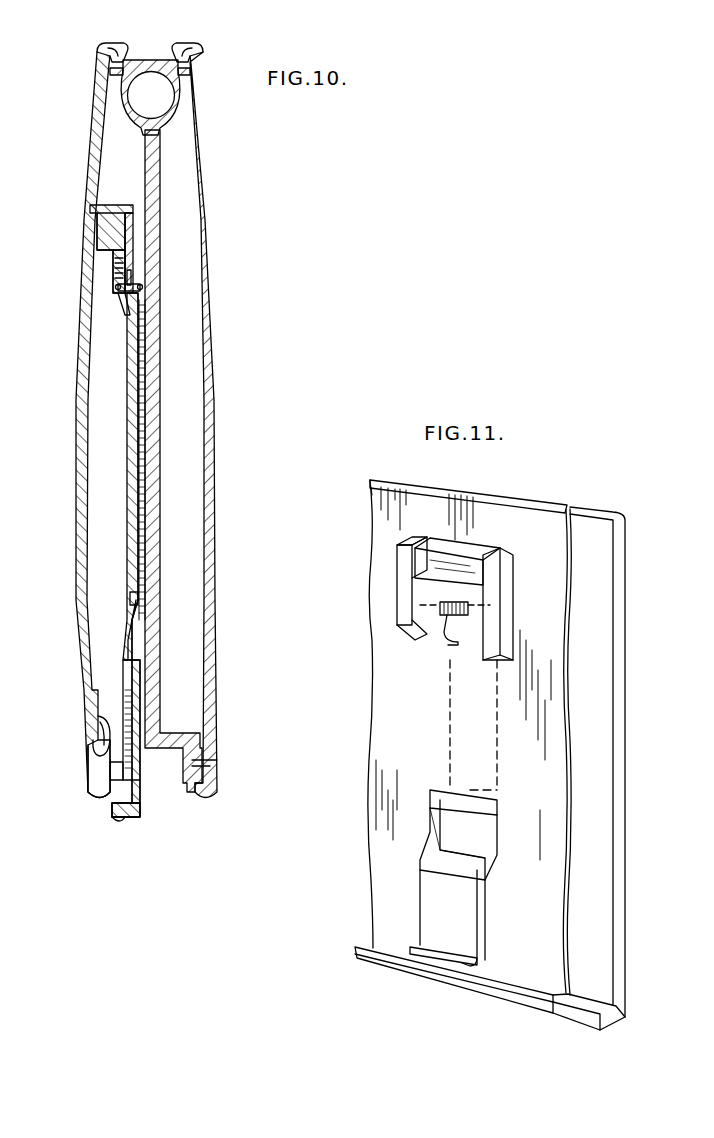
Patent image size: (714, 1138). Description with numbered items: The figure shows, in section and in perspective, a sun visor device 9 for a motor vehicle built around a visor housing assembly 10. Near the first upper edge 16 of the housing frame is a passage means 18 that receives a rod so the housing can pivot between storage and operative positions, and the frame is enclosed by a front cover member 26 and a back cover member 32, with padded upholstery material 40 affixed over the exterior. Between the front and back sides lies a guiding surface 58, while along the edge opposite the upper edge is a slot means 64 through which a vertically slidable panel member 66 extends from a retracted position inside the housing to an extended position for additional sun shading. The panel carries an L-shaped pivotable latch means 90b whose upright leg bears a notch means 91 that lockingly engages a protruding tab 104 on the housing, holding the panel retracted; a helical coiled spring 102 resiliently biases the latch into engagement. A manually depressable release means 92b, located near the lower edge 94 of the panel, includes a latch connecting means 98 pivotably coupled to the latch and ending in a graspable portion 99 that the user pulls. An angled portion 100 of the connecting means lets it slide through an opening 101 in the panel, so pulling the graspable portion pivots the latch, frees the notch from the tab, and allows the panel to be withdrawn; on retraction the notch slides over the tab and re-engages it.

In FIG. 10, the sun visor device 9 is at (238, 148).
In FIG. 10, the visor housing assembly 10 is at (92, 80).
In FIG. 10, the first upper edge 16 is at (168, 57).
In FIG. 10, the passage means 18 is at (174, 98).
In FIG. 10, the front cover member 26 is at (211, 330).
In FIG. 10, the back cover member 32 is at (78, 405).
In FIG. 10, the padded upholstery material 40 is at (85, 665).
In FIG. 10, the guiding surface 58 is at (153, 585).
In FIG. 10, the slot means 64 is at (113, 727).
In FIG. 10, the vertically slidable panel member 66 is at (128, 440).
In FIG. 11, the vertically slidable panel member 66 is at (368, 558).
In FIG. 10, the pivotable latch means 90b is at (118, 280).
In FIG. 11, the pivotable latch means 90b is at (465, 565).
In FIG. 10, the notch means 91 is at (140, 250).
In FIG. 11, the notch means 91 is at (513, 562).
In FIG. 10, the manually depressable release means 92b is at (120, 762).
In FIG. 11, the manually depressable release means 92b is at (480, 962).
In FIG. 10, the lower edge 94 is at (122, 818).
In FIG. 10, the latch connecting means 98 is at (143, 490).
In FIG. 11, the latch connecting means 98 is at (480, 930).
In FIG. 10, the graspable portion 99 is at (112, 790).
In FIG. 11, the graspable portion 99 is at (415, 945).
In FIG. 10, the angled portion 100 is at (128, 618).
In FIG. 11, the angled portion 100 is at (480, 838).
In FIG. 10, the opening 101 is at (132, 597).
In FIG. 11, the opening 101 is at (430, 805).
In FIG. 10, the helical coiled spring 102 is at (143, 278).
In FIG. 11, the helical coiled spring 102 is at (450, 640).
In FIG. 10, the protruding tab 104 is at (105, 265).